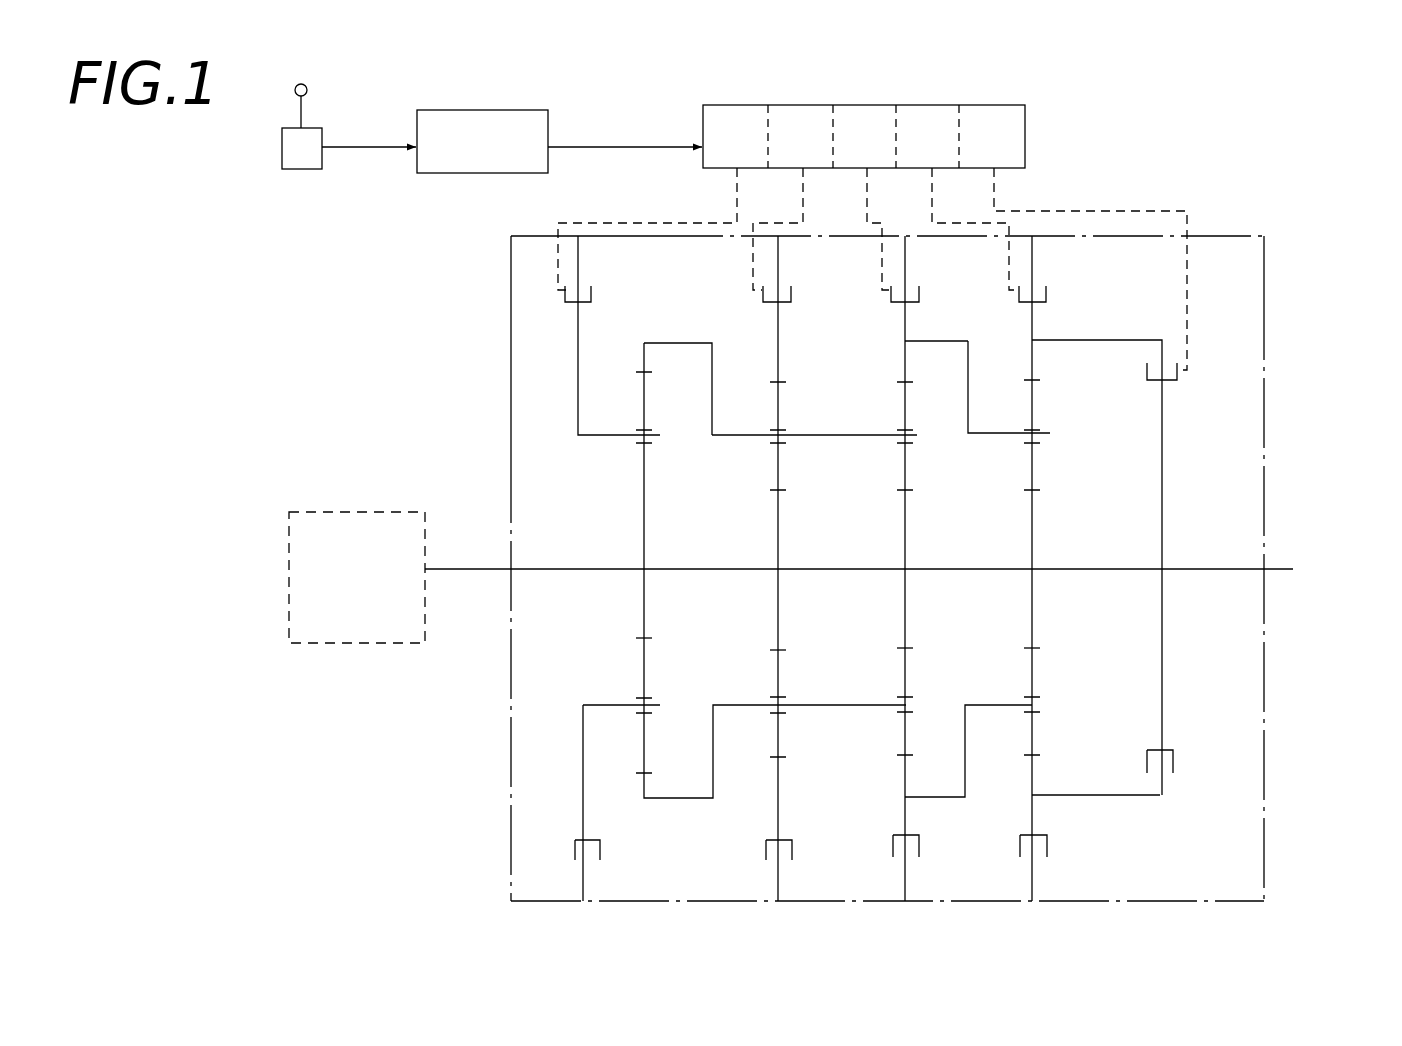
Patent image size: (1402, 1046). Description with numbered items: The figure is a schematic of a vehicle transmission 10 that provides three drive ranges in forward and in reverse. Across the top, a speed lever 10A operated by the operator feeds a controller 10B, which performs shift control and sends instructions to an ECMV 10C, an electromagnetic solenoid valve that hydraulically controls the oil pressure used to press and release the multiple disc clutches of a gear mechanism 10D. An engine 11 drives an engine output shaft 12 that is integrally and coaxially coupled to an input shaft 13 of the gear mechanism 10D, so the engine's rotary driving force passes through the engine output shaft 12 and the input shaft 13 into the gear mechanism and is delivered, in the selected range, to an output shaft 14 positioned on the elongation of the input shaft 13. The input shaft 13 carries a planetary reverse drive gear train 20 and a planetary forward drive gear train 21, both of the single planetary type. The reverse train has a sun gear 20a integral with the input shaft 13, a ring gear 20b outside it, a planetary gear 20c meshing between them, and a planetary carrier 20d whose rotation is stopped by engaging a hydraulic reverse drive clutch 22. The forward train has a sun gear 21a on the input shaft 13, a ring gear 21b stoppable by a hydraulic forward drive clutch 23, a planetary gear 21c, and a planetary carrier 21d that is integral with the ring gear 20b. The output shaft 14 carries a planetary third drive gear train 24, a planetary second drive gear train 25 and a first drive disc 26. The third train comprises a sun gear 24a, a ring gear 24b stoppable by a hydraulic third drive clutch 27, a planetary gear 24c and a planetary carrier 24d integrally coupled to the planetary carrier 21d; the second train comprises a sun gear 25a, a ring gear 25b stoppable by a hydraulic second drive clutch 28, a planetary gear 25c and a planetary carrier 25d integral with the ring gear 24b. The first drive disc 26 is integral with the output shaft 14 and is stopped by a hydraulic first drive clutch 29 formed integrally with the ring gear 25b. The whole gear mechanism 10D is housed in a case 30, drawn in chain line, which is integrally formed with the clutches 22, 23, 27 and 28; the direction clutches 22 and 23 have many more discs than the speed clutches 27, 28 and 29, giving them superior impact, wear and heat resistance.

The transmission 10 is at (1294, 118).
The speed lever 10A is at (308, 128).
The controller 10B is at (497, 110).
The ECMV 10C is at (968, 105).
The gear mechanism 10D is at (1272, 288).
The engine 11 is at (340, 645).
The engine output shaft 12 is at (445, 569).
The input shaft 13 is at (490, 569).
The output shaft 14 is at (1285, 566).
The planetary reverse drive gear train 20 is at (562, 780).
The sun gear 20a is at (644, 619).
The ring gear 20b is at (644, 355).
The planetary gear 20c is at (644, 468).
The planetary carrier 20d is at (578, 403).
The planetary forward drive gear train 21 is at (712, 812).
The sun gear 21a is at (778, 617).
The ring gear 21b is at (778, 343).
The planetary gear 21c is at (778, 472).
The planetary carrier 21d is at (712, 410).
The hydraulic reverse drive clutch 22 is at (604, 296).
The hydraulic forward drive clutch 23 is at (793, 295).
The planetary third drive gear train 24 is at (858, 752).
The sun gear 24a is at (905, 617).
The ring gear 24b is at (905, 348).
The planetary gear 24c is at (905, 470).
The planetary carrier 24d is at (847, 432).
The planetary second drive gear train 25 is at (997, 770).
The sun gear 25a is at (1032, 615).
The ring gear 25b is at (1032, 350).
The planetary gear 25c is at (1032, 465).
The planetary carrier 25d is at (968, 418).
The first drive disc 26 is at (1162, 473).
The hydraulic third drive clutch 27 is at (920, 295).
The hydraulic second drive clutch 28 is at (1052, 288).
The hydraulic first drive clutch 29 is at (1192, 372).
The case 30 is at (509, 277).